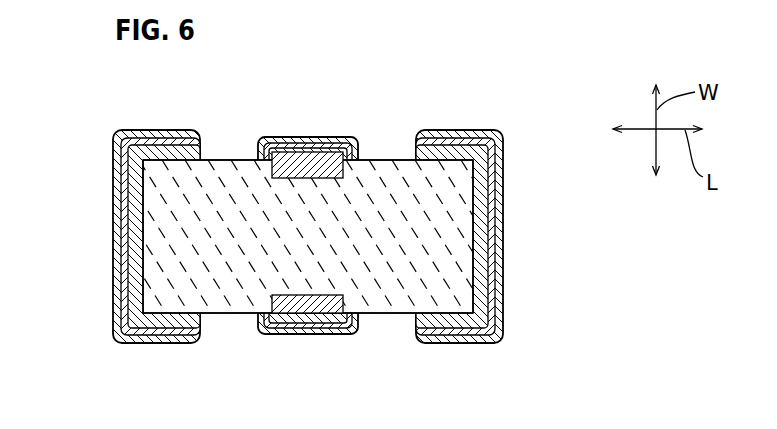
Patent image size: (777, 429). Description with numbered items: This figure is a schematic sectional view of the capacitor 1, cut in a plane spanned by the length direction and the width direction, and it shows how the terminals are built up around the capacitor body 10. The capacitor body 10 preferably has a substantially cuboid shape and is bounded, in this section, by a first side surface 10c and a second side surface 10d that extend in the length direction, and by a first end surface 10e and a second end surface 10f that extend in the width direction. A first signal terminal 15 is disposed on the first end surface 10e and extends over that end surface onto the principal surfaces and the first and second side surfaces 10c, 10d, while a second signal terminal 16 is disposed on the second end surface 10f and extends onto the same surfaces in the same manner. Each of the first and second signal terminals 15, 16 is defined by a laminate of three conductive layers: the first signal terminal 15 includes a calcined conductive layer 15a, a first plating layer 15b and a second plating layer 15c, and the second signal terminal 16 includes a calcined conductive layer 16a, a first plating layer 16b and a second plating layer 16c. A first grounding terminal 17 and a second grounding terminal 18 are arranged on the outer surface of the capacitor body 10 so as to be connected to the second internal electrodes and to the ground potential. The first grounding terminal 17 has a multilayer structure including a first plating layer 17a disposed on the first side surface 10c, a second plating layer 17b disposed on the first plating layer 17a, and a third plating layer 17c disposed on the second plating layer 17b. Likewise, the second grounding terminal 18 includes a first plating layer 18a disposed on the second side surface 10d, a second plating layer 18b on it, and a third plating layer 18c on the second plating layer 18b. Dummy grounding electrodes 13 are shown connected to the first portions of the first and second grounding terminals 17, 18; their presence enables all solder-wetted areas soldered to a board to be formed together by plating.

The capacitor 1 is at (307, 239).
The capacitor body 10 is at (309, 235).
The first side surface 10c is at (220, 158).
The second side surface 10d is at (228, 314).
The first end surface 10e is at (146, 289).
The second end surface 10f is at (477, 289).
The dummy grounding electrode 13 is at (347, 302).
The first signal terminal 15 is at (107, 236).
The calcined conductive layer 15a is at (126, 153).
The first plating layer 15b is at (119, 173).
The second plating layer 15c is at (115, 198).
The second signal terminal 16 is at (508, 236).
The calcined conductive layer 16a is at (490, 152).
The first plating layer 16b is at (497, 177).
The second plating layer 16c is at (503, 208).
The first grounding terminal 17 is at (332, 119).
The first plating layer 17a is at (288, 150).
The second plating layer 17b is at (302, 145).
The third plating layer 17c is at (334, 140).
The second grounding terminal 18 is at (331, 362).
The first plating layer 18a is at (280, 318).
The second plating layer 18b is at (312, 327).
The third plating layer 18c is at (332, 335).